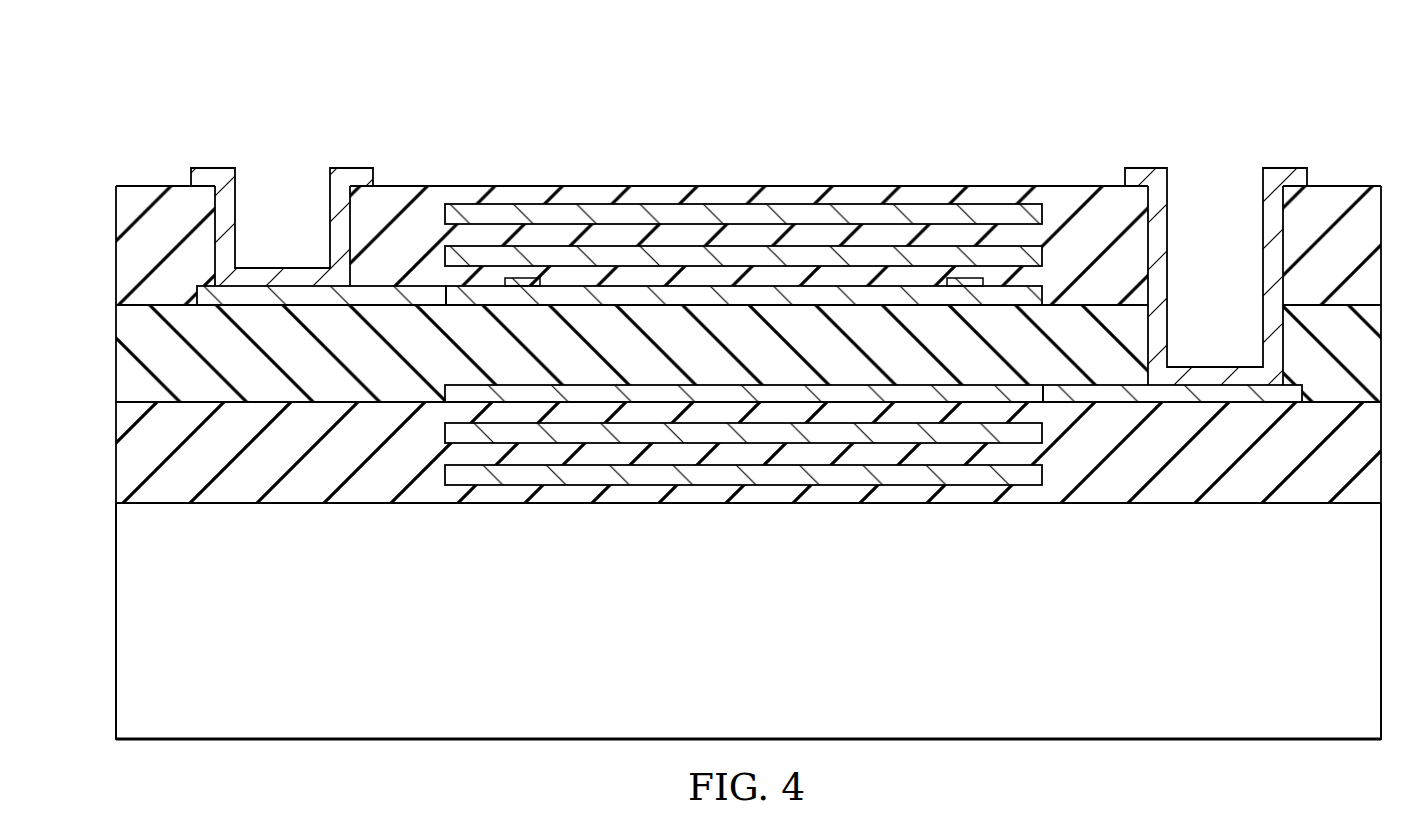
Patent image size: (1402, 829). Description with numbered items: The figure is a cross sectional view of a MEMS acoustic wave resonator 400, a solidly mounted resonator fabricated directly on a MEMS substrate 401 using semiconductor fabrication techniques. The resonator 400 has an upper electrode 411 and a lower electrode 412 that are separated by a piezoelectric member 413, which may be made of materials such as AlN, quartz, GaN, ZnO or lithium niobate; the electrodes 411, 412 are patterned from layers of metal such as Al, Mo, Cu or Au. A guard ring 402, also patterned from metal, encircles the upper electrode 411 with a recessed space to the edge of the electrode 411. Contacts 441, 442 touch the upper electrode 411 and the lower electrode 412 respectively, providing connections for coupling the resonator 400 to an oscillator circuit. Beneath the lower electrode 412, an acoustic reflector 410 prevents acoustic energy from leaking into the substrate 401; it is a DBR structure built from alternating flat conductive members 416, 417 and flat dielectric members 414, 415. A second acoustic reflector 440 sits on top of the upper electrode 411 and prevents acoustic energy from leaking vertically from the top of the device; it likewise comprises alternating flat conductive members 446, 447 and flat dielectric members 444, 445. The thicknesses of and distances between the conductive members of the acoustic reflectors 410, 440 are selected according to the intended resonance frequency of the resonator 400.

The MEMS acoustic wave resonator 400 is at (558, 80).
The MEMS substrate 401 is at (123, 622).
The guard ring 402 is at (541, 287).
The acoustic reflector 410 is at (771, 487).
The upper electrode 411 is at (365, 293).
The lower electrode 412 is at (838, 393).
The piezoelectric member 413 is at (123, 323).
The flat dielectric member 414 is at (1033, 413).
The flat dielectric member 415 is at (1025, 453).
The flat conductive member 416 is at (1038, 432).
The flat conductive member 417 is at (1028, 477).
The second acoustic reflector 440 is at (758, 211).
The contact 441 is at (222, 177).
The contact 442 is at (1273, 178).
The flat dielectric member 444 is at (1032, 277).
The flat dielectric member 445 is at (1025, 233).
The flat conductive member 446 is at (948, 257).
The flat conductive member 447 is at (1003, 213).